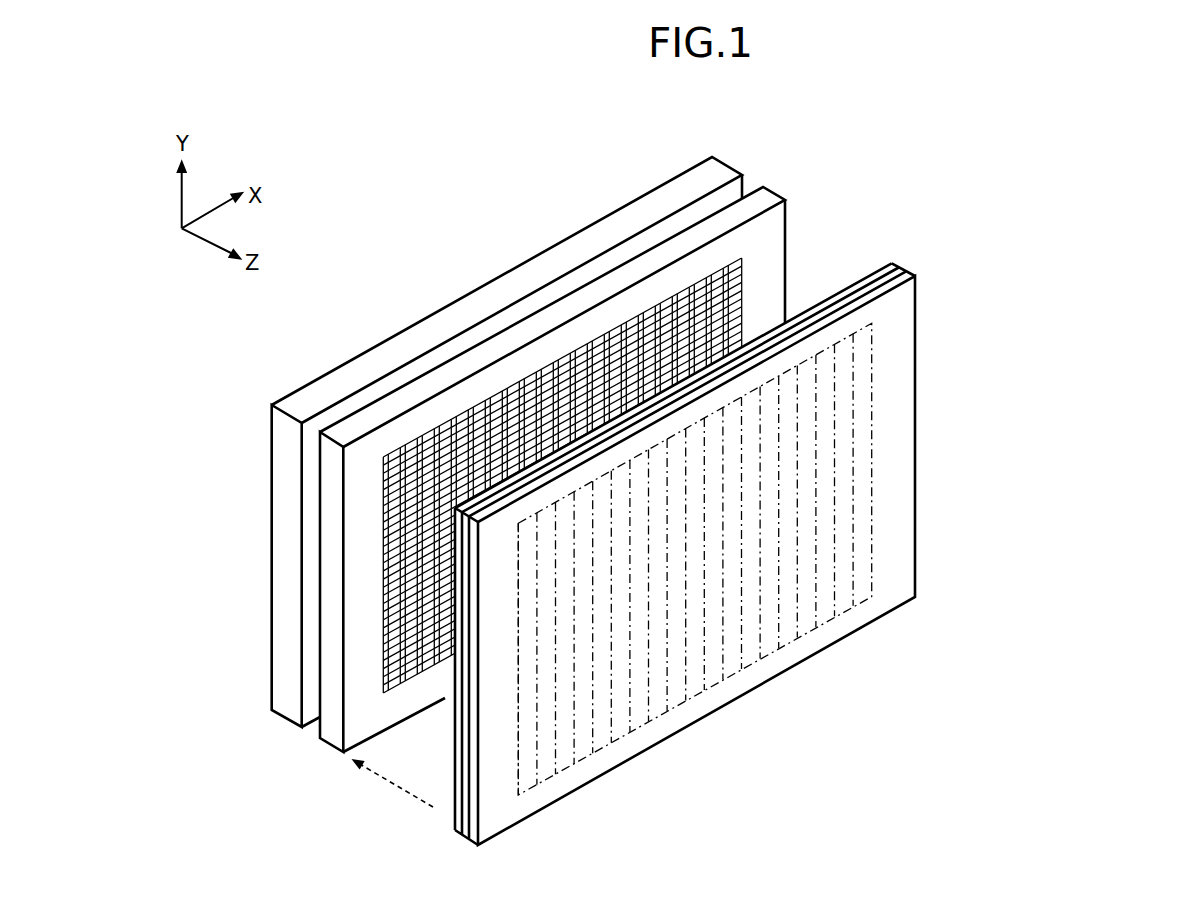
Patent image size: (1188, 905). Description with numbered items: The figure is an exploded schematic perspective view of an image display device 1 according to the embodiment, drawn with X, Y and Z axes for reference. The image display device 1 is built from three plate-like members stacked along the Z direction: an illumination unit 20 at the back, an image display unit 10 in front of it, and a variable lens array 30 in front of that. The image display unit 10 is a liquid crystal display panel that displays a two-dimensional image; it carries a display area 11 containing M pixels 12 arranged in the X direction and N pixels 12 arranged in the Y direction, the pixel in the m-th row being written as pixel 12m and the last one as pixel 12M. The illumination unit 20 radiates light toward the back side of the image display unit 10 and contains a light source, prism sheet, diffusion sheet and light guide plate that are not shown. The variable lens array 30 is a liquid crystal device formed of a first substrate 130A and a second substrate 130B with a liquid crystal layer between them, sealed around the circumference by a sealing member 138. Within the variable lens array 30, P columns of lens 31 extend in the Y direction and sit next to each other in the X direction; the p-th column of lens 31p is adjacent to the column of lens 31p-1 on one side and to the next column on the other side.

The image display device 1 is at (513, 184).
The image display unit 10 is at (781, 193).
The display area 11 is at (743, 287).
The pixel 12 is at (512, 408).
The pixel 12m is at (558, 360).
The pixel 12M is at (737, 257).
The illumination unit 20 is at (733, 166).
The variable lens array 30 is at (927, 392).
The first substrate 130A is at (893, 265).
The sealing member 138 is at (905, 271).
The second substrate 130B is at (913, 277).
The column of lens 31 is at (694, 583).
The column of lens 31p-1 is at (693, 688).
The column of lens 31p is at (712, 678).